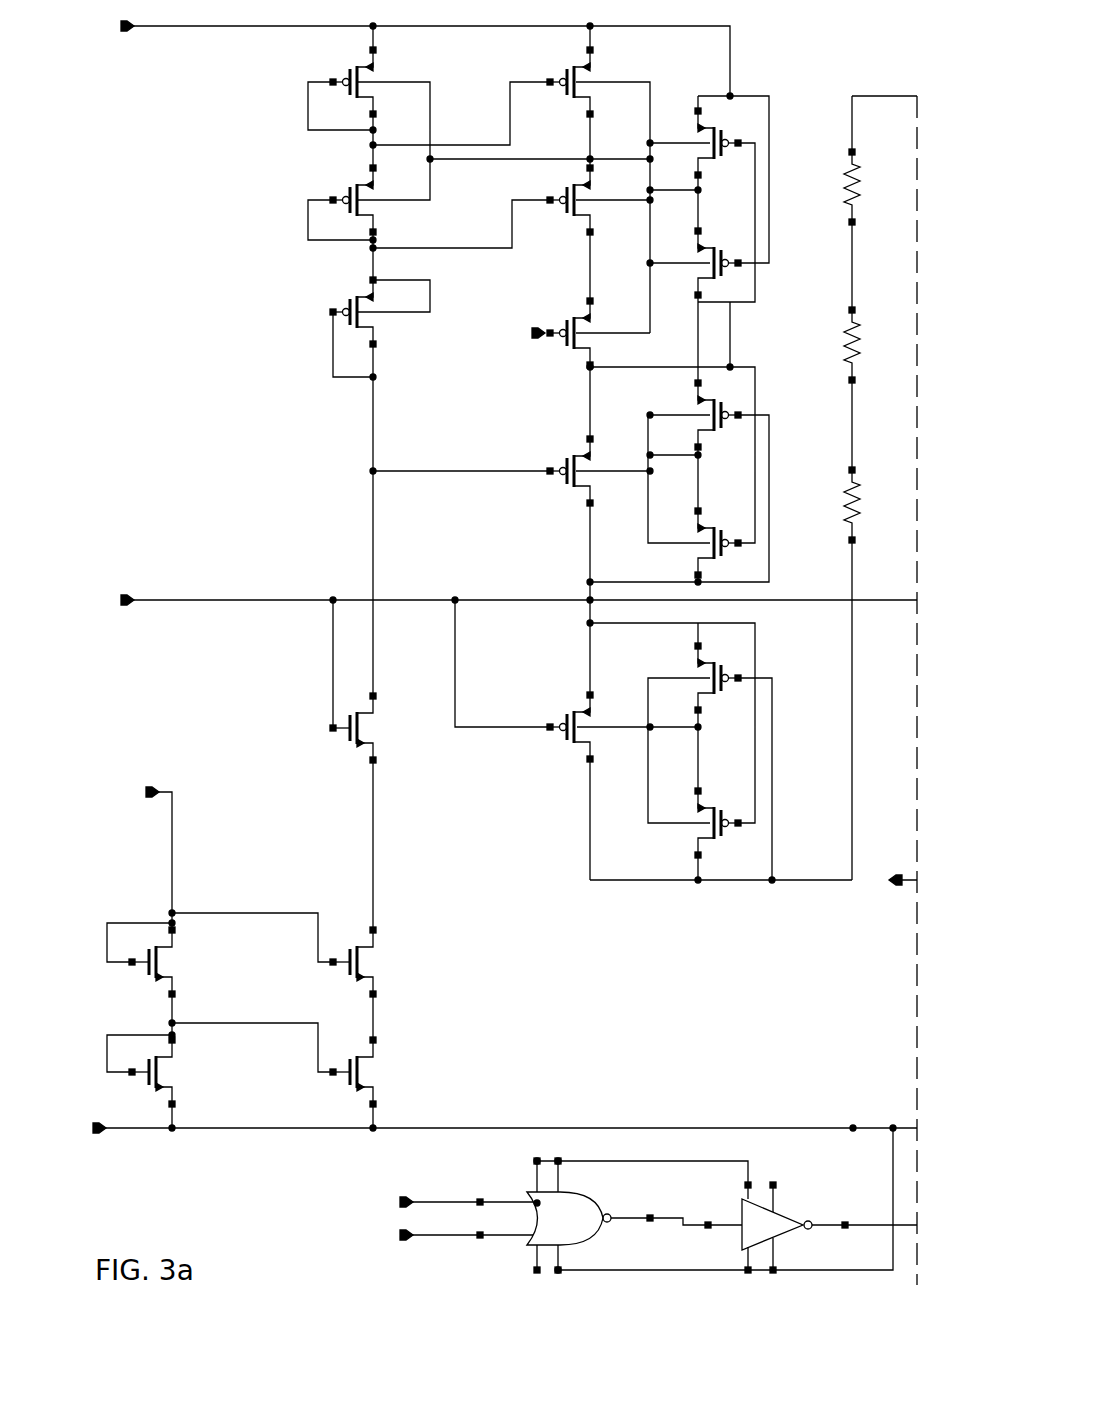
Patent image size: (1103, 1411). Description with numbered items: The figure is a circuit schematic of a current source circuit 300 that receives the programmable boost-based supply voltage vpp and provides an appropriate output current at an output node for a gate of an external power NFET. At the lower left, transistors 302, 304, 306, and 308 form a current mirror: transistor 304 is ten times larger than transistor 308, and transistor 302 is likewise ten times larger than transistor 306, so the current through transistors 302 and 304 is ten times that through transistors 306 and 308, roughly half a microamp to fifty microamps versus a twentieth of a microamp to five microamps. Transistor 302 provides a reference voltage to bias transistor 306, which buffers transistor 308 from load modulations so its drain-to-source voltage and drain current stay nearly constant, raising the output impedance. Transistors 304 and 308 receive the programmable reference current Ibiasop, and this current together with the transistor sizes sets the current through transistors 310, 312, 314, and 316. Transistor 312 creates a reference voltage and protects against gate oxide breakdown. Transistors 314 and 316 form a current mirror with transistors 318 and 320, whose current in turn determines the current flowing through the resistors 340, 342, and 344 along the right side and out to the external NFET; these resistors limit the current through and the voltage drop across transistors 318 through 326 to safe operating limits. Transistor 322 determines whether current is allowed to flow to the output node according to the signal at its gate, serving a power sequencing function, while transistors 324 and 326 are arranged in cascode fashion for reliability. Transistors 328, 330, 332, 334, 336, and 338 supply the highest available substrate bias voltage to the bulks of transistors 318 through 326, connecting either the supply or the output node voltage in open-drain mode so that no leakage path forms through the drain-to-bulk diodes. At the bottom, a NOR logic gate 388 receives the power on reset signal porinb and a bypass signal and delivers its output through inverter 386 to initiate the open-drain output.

The current source circuit 300 is at (218, 432).
The transistor 302 is at (139, 975).
The transistor 304 is at (139, 1090).
The transistor 306 is at (415, 941).
The transistor 308 is at (415, 1057).
The transistor 310 is at (339, 750).
The transistor 312 is at (346, 294).
The transistor 314 is at (346, 182).
The transistor 316 is at (346, 70).
The transistor 318 is at (565, 61).
The transistor 320 is at (565, 189).
The transistor 322 is at (565, 314).
The transistor 324 is at (565, 449).
The transistor 326 is at (568, 759).
The transistor 328 is at (736, 832).
The transistor 330 is at (736, 670).
The transistor 332 is at (736, 552).
The transistor 334 is at (736, 410).
The transistor 336 is at (736, 272).
The transistor 338 is at (736, 140).
The resistor 340 is at (853, 153).
The resistor 342 is at (853, 311).
The resistor 344 is at (846, 470).
The inverter 386 is at (790, 1233).
The logic gate (NOR) 388 is at (530, 1252).